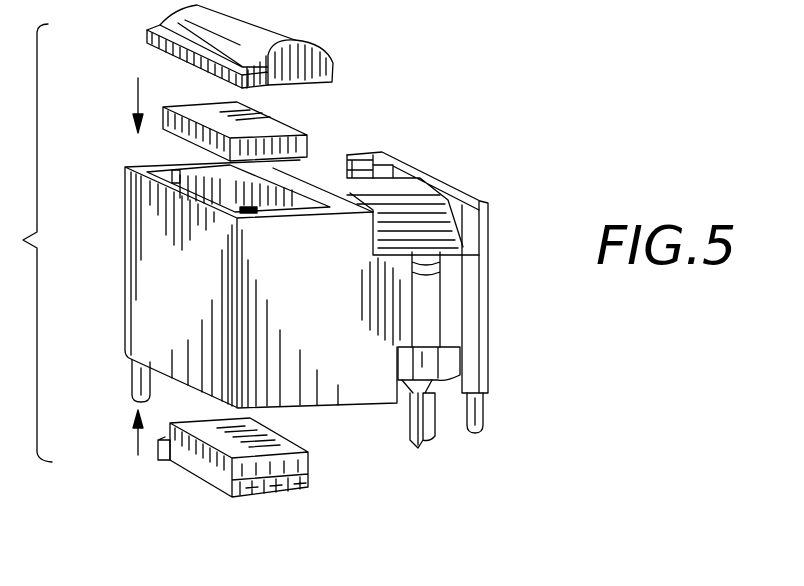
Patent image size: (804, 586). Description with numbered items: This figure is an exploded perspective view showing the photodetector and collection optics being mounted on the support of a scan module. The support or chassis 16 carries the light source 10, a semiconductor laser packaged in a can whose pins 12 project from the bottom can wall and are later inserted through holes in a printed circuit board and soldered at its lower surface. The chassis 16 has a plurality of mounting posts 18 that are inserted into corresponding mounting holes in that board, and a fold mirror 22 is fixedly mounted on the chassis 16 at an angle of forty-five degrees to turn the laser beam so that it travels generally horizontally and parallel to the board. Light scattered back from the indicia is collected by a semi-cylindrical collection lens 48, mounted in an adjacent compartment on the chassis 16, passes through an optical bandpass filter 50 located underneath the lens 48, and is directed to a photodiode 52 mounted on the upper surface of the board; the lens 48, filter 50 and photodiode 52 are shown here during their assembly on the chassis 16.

The light source 10 is at (418, 312).
The pins 12 is at (416, 447).
The support or chassis 16 is at (123, 232).
The mounting posts 18 is at (132, 380).
The fold mirror 22 is at (445, 217).
The collection lens 48 is at (328, 56).
The optical bandpass filter 50 is at (302, 133).
The photodiode 52 is at (310, 487).